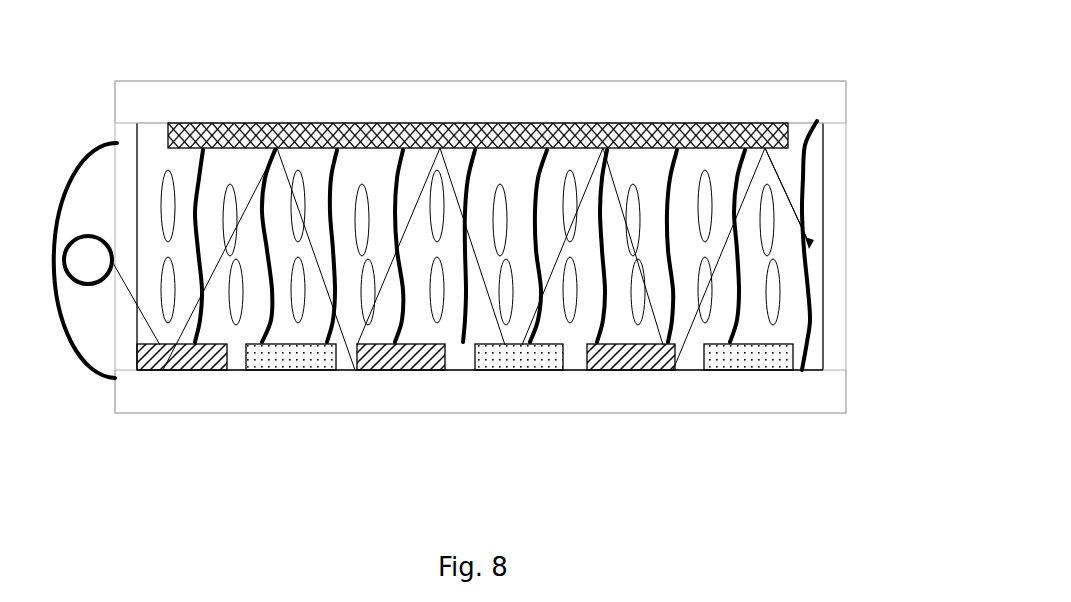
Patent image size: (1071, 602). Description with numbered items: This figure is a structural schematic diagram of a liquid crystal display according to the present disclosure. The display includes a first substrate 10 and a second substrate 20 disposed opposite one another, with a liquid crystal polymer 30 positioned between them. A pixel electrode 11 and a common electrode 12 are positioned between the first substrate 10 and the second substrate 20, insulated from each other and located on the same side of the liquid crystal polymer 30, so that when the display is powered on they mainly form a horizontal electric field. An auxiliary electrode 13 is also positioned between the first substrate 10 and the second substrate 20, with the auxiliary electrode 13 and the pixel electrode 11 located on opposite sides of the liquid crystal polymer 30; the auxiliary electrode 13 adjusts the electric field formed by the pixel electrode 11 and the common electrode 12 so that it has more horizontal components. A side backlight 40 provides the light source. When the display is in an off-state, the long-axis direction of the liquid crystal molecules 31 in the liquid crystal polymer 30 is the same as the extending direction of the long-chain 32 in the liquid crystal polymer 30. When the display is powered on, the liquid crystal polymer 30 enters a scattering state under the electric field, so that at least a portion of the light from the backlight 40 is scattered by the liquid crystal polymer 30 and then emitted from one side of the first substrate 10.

The first substrate 10 is at (480, 80).
The pixel electrode 11 is at (386, 400).
The common electrode 12 is at (519, 411).
The auxiliary electrode 13 is at (478, 78).
The second substrate 20 is at (480, 427).
The liquid crystal polymer 30 is at (858, 245).
The liquid crystal molecules 31 is at (779, 263).
The long-chain 32 is at (803, 211).
The side backlight 40 is at (71, 340).